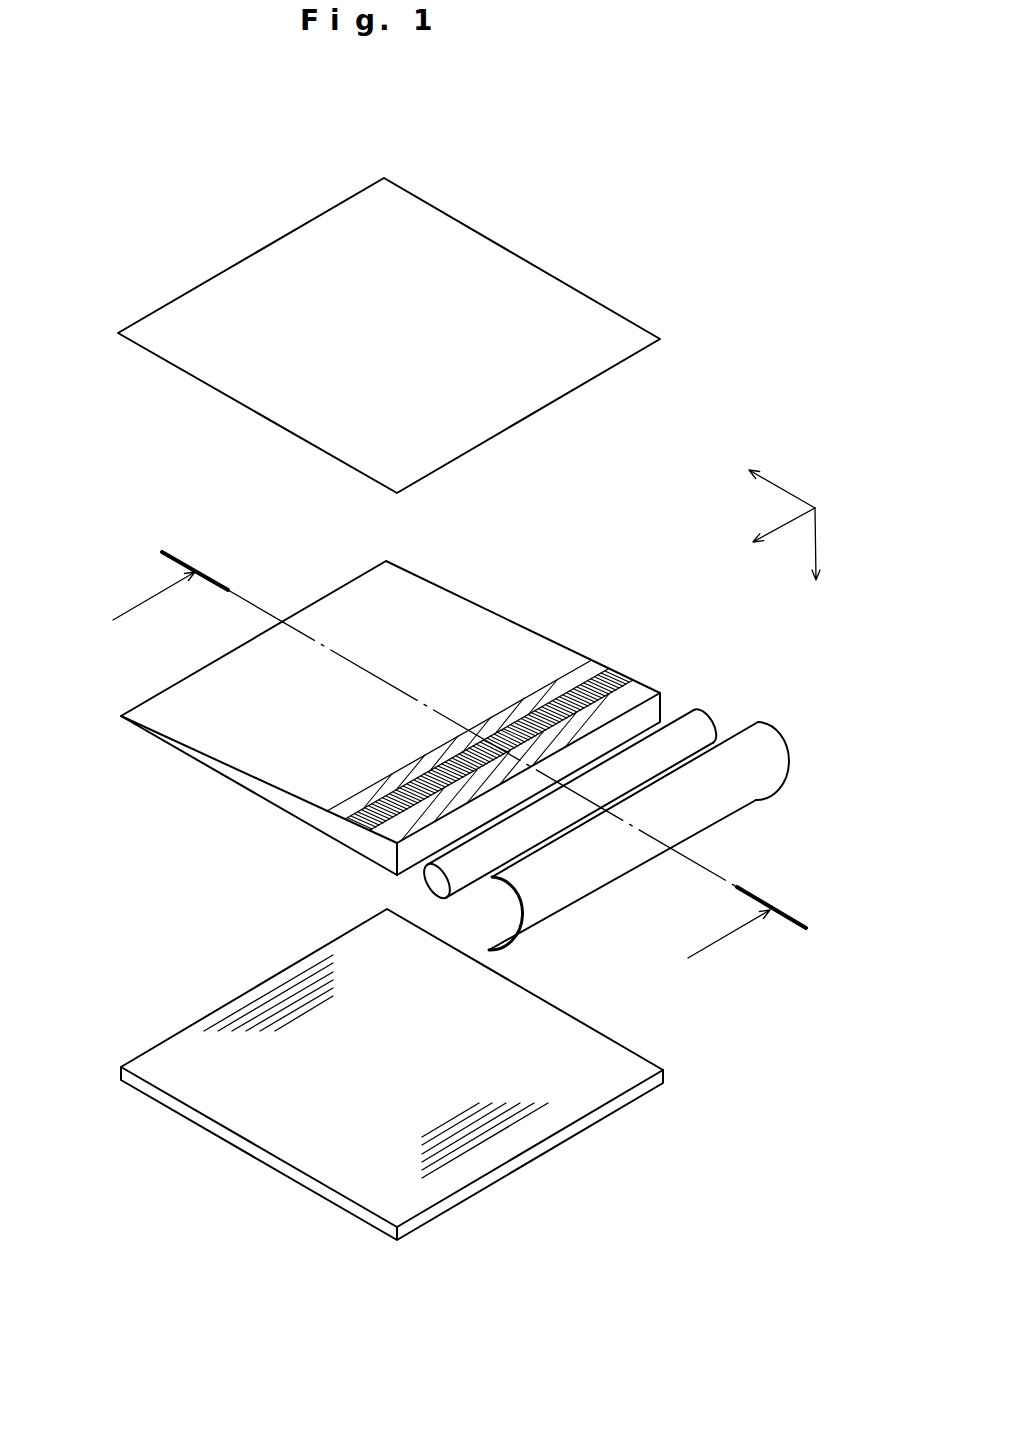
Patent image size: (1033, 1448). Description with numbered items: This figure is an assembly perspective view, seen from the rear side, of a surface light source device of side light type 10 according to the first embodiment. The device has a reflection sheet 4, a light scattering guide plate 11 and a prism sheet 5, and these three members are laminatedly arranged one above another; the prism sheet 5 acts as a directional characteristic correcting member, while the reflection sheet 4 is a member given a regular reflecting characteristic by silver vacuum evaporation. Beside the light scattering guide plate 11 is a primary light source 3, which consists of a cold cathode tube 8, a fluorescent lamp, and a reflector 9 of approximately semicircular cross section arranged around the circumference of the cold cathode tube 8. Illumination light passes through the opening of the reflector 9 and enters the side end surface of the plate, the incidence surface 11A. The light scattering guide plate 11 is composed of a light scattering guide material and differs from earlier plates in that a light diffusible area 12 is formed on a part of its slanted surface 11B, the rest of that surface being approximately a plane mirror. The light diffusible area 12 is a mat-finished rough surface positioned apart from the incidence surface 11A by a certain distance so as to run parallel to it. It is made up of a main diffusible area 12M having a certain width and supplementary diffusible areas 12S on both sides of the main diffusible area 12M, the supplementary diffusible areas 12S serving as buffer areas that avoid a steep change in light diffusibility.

The surface light source device of side light type 10 is at (113, 1347).
The primary light source 3 is at (627, 800).
The reflection sheet 4 is at (547, 387).
The prism sheet 5 is at (468, 1178).
The cold cathode tube 8 is at (672, 743).
The reflector 9 is at (610, 867).
The light scattering guide plate 11 is at (424, 714).
The incidence surface 11A is at (652, 712).
The slanted surface 11B is at (352, 615).
The light diffusible area 12 is at (410, 753).
The supplementary diffusible area 12S is at (336, 815).
The main diffusible area 12M is at (358, 825).